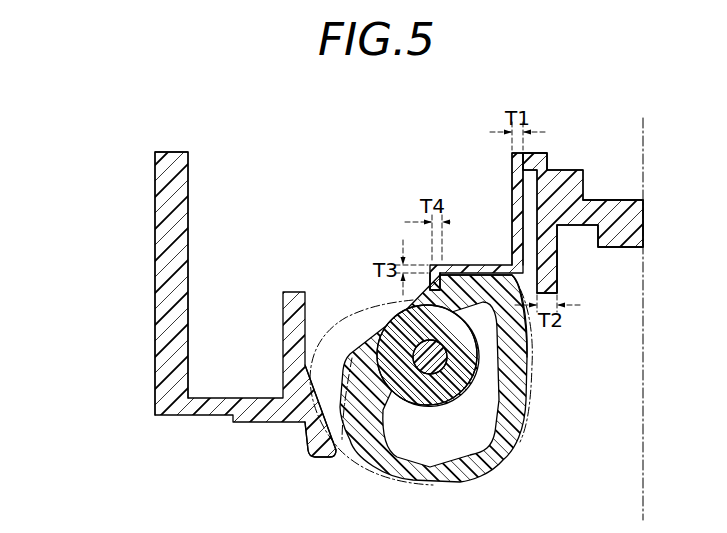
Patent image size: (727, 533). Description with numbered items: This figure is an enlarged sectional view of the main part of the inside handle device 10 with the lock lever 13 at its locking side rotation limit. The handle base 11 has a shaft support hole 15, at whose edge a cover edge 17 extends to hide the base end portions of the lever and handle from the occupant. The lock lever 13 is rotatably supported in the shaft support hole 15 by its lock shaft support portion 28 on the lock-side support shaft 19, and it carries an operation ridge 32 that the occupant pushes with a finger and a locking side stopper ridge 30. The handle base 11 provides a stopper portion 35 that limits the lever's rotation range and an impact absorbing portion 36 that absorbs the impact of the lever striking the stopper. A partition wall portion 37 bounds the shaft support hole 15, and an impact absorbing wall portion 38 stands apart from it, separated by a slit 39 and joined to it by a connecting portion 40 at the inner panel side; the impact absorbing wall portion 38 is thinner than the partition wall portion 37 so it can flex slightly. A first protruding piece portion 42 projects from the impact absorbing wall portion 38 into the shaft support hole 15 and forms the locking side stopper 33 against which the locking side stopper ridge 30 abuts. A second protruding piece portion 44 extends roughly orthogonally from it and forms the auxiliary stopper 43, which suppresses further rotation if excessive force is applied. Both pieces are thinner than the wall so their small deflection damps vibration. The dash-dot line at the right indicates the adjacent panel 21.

The inside handle device 10 is at (120, 182).
The handle base 11 is at (157, 229).
The lock lever 13 is at (472, 339).
The shaft support hole 15 is at (246, 204).
The cover edge 17 is at (311, 446).
The lock-side support shaft 19 is at (424, 373).
The panel 21 is at (624, 248).
The lock shaft support portion 28 is at (367, 320).
The locking side stopper ridge 30 is at (408, 222).
The operation ridge 32 is at (450, 338).
The locking side stopper 33 is at (478, 290).
The stopper portion 35 is at (568, 164).
The impact absorbing portion 36 is at (568, 164).
The partition wall portion 37 is at (556, 277).
The impact absorbing wall portion 38 is at (511, 182).
The slit 39 is at (540, 193).
The connecting portion 40 is at (535, 151).
The first protruding piece portion 42 is at (528, 313).
The auxiliary stopper 43 is at (428, 292).
The second protruding piece portion 44 is at (452, 250).